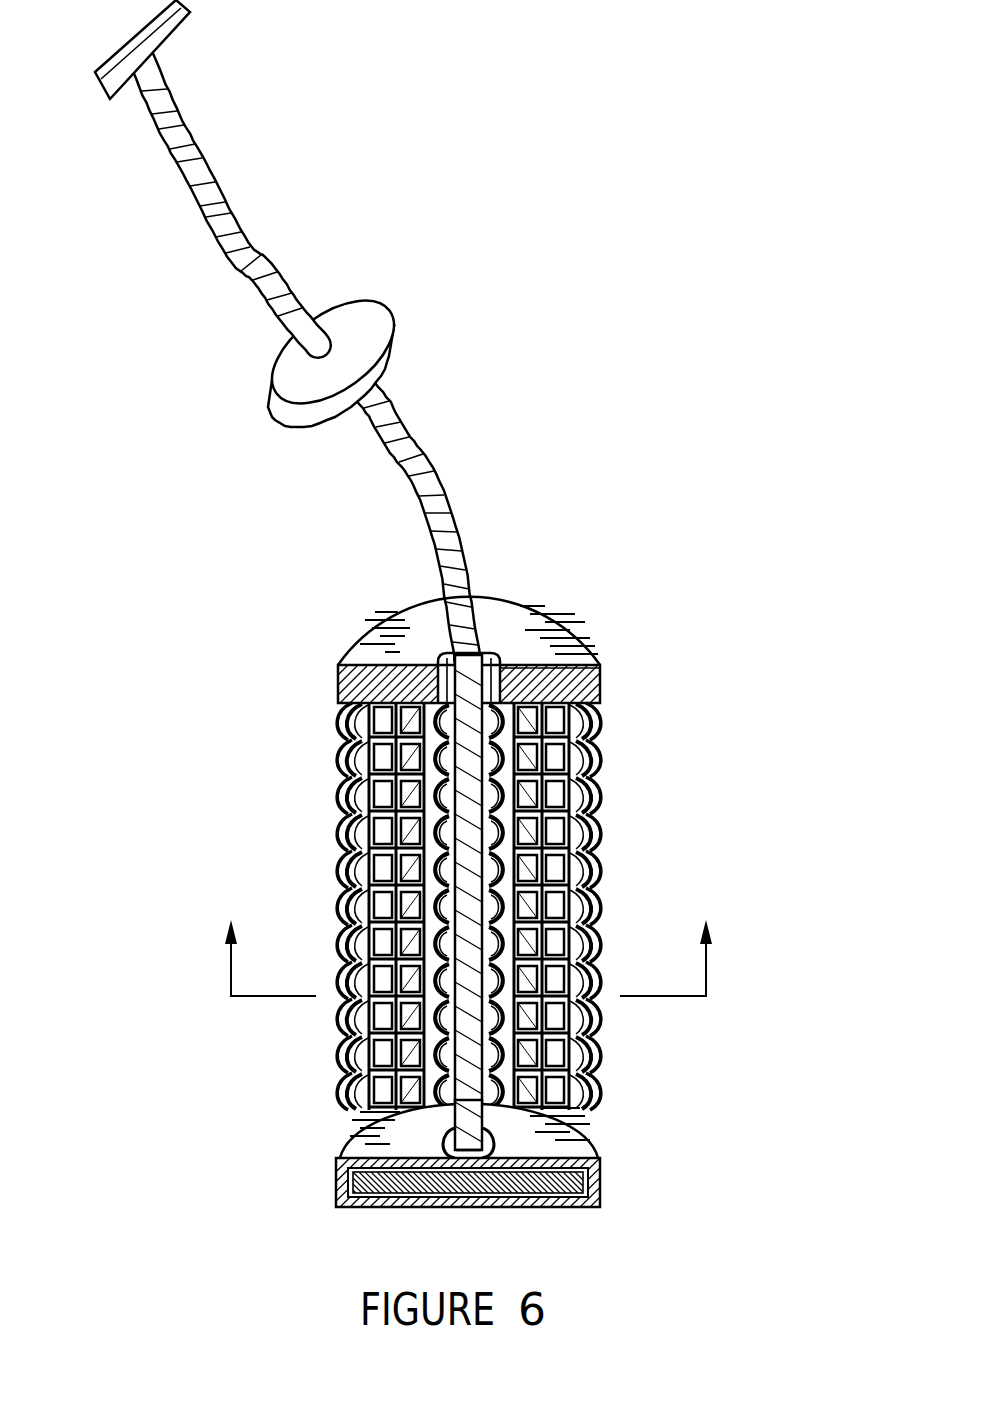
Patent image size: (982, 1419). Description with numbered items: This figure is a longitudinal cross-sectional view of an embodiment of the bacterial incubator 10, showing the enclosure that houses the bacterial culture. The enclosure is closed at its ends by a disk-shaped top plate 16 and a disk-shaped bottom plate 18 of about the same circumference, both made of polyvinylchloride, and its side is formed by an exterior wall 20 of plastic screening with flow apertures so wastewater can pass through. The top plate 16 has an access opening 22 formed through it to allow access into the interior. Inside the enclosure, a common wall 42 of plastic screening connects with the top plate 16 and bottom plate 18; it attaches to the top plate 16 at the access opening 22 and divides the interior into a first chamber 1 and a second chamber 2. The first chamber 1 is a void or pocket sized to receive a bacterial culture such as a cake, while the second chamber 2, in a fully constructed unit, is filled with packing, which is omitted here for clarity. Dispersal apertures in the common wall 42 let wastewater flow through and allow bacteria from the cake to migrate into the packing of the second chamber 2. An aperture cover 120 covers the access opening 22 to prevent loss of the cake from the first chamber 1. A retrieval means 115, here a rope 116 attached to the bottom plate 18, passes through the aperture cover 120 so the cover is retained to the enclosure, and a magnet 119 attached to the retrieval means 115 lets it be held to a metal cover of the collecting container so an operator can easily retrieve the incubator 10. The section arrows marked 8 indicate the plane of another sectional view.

The bacterial incubator 10 is at (455, 632).
The top plate 16 is at (510, 621).
The bottom plate 18 is at (600, 1187).
The exterior wall 20 is at (592, 847).
The access opening 22 is at (487, 671).
The first chamber 1 is at (479, 1142).
The second chamber 2 is at (418, 1151).
The common wall 42 is at (462, 1150).
The retrieval means 115 is at (310, 362).
The rope 116 is at (310, 362).
The magnet 119 is at (168, 27).
The aperture cover 120 is at (350, 323).
The section line 8- 8 is at (468, 958).